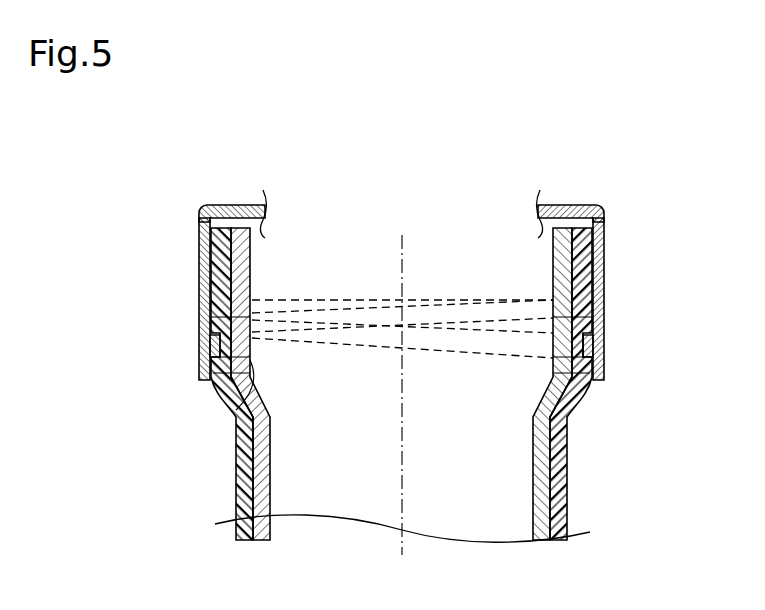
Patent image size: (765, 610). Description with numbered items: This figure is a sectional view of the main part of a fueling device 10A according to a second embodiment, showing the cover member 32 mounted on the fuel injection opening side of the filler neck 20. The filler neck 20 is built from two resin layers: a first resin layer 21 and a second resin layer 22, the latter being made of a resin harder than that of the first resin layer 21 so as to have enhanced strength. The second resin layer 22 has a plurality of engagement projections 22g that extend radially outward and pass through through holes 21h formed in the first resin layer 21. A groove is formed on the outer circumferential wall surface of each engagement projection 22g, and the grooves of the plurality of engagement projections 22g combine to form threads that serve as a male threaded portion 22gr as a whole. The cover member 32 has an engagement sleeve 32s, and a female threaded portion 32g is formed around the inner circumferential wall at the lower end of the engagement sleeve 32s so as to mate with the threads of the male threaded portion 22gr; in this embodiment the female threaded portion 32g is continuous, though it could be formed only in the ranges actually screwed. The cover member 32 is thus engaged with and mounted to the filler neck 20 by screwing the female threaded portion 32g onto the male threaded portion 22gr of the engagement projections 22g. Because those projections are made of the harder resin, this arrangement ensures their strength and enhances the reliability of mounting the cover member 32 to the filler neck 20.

The fueling device 10A is at (656, 175).
The cover member 32 is at (201, 276).
The engagement sleeve 32s is at (401, 299).
The female threaded portion 32g is at (213, 345).
The filler neck 20 is at (135, 467).
The first resin layer 21 is at (262, 518).
The through hole 21h is at (236, 410).
The second resin layer 22 is at (238, 515).
The engagement projection 22g is at (213, 302).
The male threaded portion 22gr is at (604, 352).